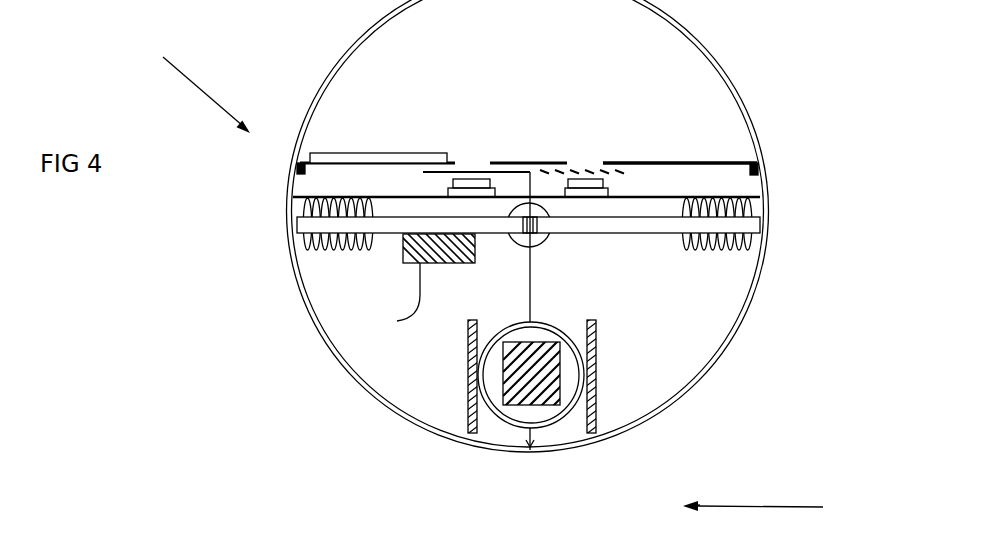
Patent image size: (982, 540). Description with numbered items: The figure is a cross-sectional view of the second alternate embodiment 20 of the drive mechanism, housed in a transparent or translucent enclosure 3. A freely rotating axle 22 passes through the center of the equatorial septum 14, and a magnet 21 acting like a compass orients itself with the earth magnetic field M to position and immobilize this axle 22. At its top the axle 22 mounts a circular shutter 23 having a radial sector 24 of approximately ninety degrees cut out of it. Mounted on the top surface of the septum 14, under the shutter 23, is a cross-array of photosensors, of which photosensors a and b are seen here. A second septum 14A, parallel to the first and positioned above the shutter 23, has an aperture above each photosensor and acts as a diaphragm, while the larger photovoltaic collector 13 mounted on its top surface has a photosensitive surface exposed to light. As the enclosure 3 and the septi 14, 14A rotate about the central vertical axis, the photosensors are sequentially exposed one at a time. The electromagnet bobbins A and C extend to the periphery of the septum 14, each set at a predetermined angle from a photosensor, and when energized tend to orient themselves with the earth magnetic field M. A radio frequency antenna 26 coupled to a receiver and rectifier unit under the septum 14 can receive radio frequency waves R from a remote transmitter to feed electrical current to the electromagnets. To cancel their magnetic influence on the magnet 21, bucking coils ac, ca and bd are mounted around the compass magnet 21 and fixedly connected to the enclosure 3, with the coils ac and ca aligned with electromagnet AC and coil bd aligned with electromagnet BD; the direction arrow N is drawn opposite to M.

The enclosure 3 is at (717, 348).
The second alternate embodiment of the drive mechanism 20 is at (758, 64).
The photovoltaic collector 13 is at (340, 152).
The equatorial septum 14 is at (710, 197).
The second septum 14A is at (633, 162).
The circular shutter 23 is at (440, 178).
The radial sector 24 is at (615, 178).
The axle 22 is at (538, 273).
The magnet 21 is at (545, 342).
The radio frequency antenna 26 is at (422, 302).
The photosensor a is at (475, 198).
The photosensor b is at (582, 198).
The electromagnet A is at (317, 252).
The electromagnet C is at (733, 250).
The bucking coil ac is at (468, 400).
The bucking coil ca is at (596, 400).
The bucking coil bd is at (524, 323).
The radio frequency waves R is at (206, 95).
The earth magnetic field M is at (761, 507).
The direction N is at (686, 518).